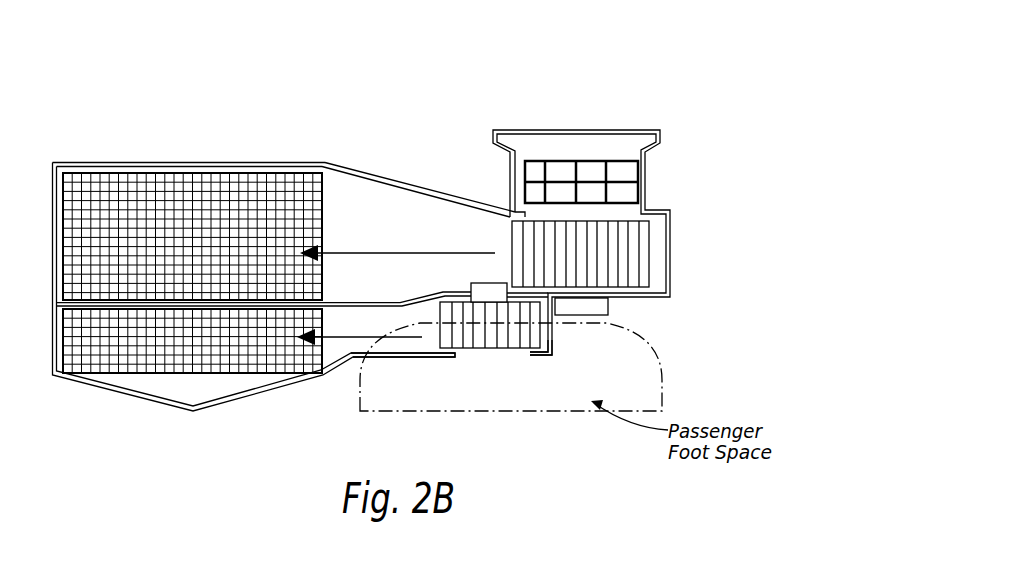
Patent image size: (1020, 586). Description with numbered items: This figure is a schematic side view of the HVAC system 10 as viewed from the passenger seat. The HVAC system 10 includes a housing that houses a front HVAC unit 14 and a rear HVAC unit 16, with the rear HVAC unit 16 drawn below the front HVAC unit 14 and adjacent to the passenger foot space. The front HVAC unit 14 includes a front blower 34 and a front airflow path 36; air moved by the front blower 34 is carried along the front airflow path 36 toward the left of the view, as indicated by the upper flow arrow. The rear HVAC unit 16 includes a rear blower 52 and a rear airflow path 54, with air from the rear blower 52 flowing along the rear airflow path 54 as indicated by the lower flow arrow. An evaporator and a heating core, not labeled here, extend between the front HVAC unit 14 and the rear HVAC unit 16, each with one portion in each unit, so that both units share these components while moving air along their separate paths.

The HVAC system 10 is at (600, 83).
The front HVAC unit 14 is at (677, 202).
The rear HVAC unit 16 is at (483, 364).
The front blower 34 is at (650, 251).
The front airflow path 36 is at (372, 200).
The rear blower 52 is at (540, 332).
The rear airflow path 54 is at (392, 345).